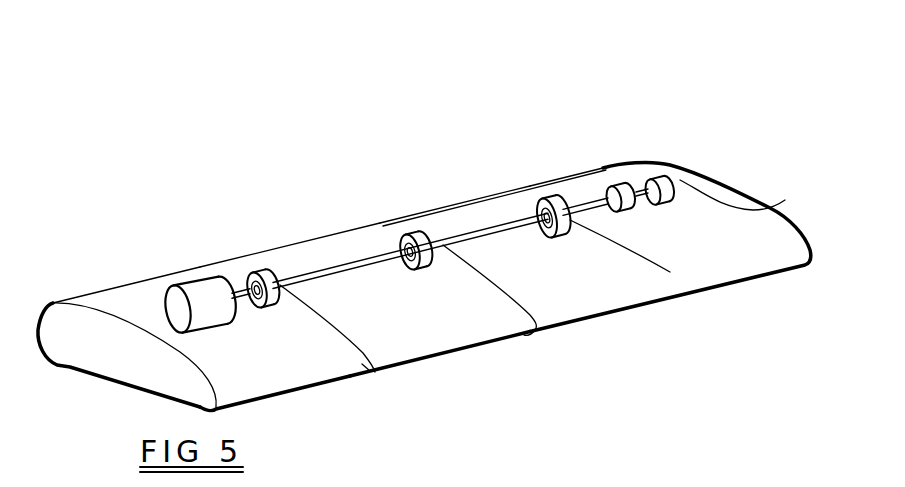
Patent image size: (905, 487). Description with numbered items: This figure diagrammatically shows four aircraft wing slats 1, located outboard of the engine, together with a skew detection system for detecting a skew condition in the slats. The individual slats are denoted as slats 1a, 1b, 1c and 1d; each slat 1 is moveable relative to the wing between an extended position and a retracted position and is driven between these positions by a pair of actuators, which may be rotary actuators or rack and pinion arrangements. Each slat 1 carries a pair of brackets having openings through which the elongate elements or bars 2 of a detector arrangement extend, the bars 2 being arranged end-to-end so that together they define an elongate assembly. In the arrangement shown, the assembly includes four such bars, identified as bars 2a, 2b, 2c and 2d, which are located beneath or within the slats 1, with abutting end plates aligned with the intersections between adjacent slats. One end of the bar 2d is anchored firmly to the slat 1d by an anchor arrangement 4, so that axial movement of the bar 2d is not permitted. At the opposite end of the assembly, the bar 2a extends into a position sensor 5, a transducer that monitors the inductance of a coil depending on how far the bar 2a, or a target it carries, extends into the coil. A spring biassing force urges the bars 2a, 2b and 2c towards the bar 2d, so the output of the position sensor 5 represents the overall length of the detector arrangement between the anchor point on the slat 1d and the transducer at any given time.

The slat 1 is at (424, 208).
The slat 1a is at (118, 277).
The slat 1b is at (312, 226).
The slat 1c is at (467, 189).
The slat 1d is at (585, 162).
The bar 2 is at (452, 242).
The bar 2a is at (240, 288).
The bar 2b is at (368, 250).
The bar 2c is at (510, 225).
The bar 2d is at (667, 141).
The anchor arrangement 4 is at (752, 210).
The position sensor 5 is at (198, 320).